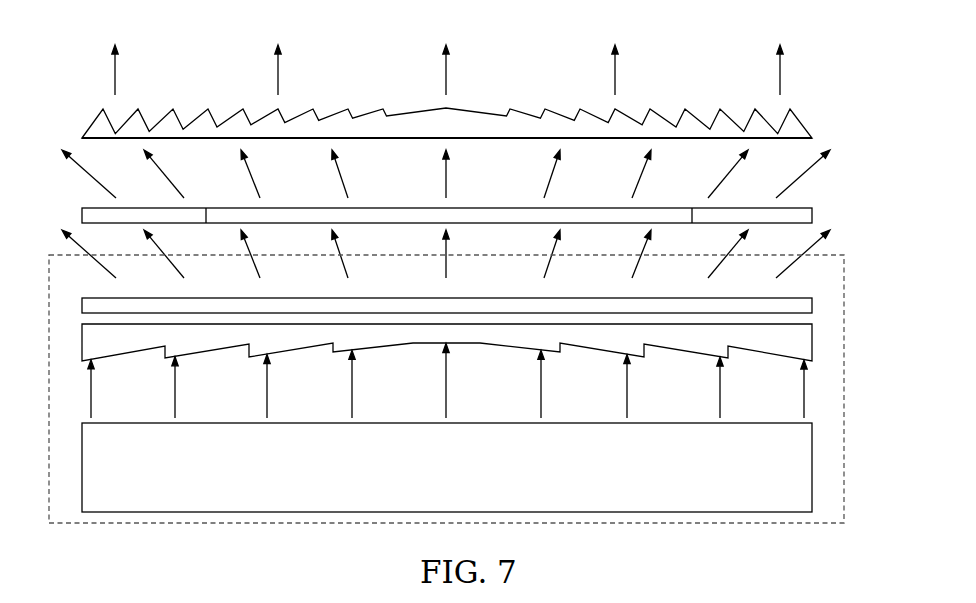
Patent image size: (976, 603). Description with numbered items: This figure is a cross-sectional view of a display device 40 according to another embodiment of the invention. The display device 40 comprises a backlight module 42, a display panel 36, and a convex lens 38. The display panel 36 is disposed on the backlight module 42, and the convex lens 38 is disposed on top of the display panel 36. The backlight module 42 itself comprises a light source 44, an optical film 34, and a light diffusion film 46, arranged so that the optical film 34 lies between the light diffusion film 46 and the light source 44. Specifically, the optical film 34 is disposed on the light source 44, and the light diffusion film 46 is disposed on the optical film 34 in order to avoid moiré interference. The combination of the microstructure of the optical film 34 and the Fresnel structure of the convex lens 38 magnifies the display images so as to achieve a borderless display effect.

The display device 40 is at (55, 68).
The convex lens 38 is at (795, 127).
The display panel 36 is at (828, 215).
The backlight module 42 is at (846, 261).
The light diffusion film 46 is at (802, 307).
The optical film 34 is at (802, 345).
The light source 44 is at (802, 471).